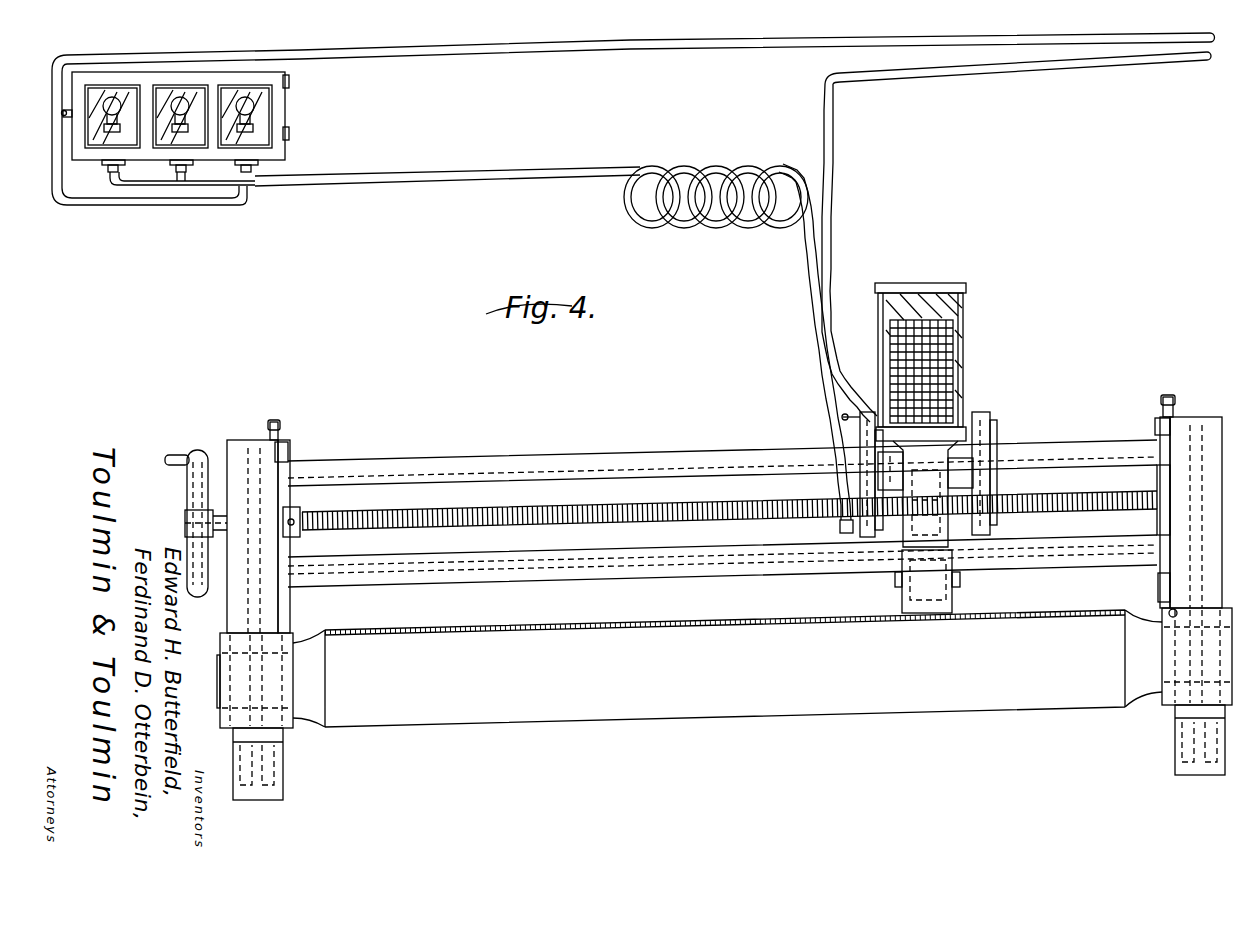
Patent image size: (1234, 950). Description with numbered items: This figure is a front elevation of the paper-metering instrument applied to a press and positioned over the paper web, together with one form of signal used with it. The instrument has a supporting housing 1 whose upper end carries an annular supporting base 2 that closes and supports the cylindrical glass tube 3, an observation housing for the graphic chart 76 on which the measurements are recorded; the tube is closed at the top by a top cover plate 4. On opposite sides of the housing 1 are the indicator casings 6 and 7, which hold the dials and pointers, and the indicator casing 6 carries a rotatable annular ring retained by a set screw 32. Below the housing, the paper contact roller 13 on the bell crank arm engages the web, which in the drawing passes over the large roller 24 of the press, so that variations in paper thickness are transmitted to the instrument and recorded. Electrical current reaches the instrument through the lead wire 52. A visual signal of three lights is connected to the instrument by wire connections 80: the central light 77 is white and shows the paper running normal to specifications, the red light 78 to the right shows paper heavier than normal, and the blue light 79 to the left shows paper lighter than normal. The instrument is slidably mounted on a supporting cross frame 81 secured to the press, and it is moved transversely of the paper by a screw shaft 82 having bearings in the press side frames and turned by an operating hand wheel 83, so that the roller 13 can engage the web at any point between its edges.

The supporting housing 1 is at (903, 540).
The annular supporting base 2 is at (960, 425).
The cylindrical glass tube 3 is at (966, 367).
The top cover plate 4 is at (965, 290).
The indicator casing 6 is at (858, 411).
The indicator casing 7 is at (989, 414).
The paper contact roller 13 is at (950, 600).
The roller 24 is at (497, 626).
The set screw 32 is at (990, 407).
The lead wire 52 is at (833, 130).
The graphic chart 76 is at (947, 333).
The central light 77 is at (165, 130).
The red light 78 is at (262, 120).
The blue light 79 is at (97, 133).
The wire connections 80 is at (418, 172).
The supporting cross frame 81 is at (573, 458).
The screw shaft 82 is at (650, 504).
The operating hand wheel 83 is at (200, 452).